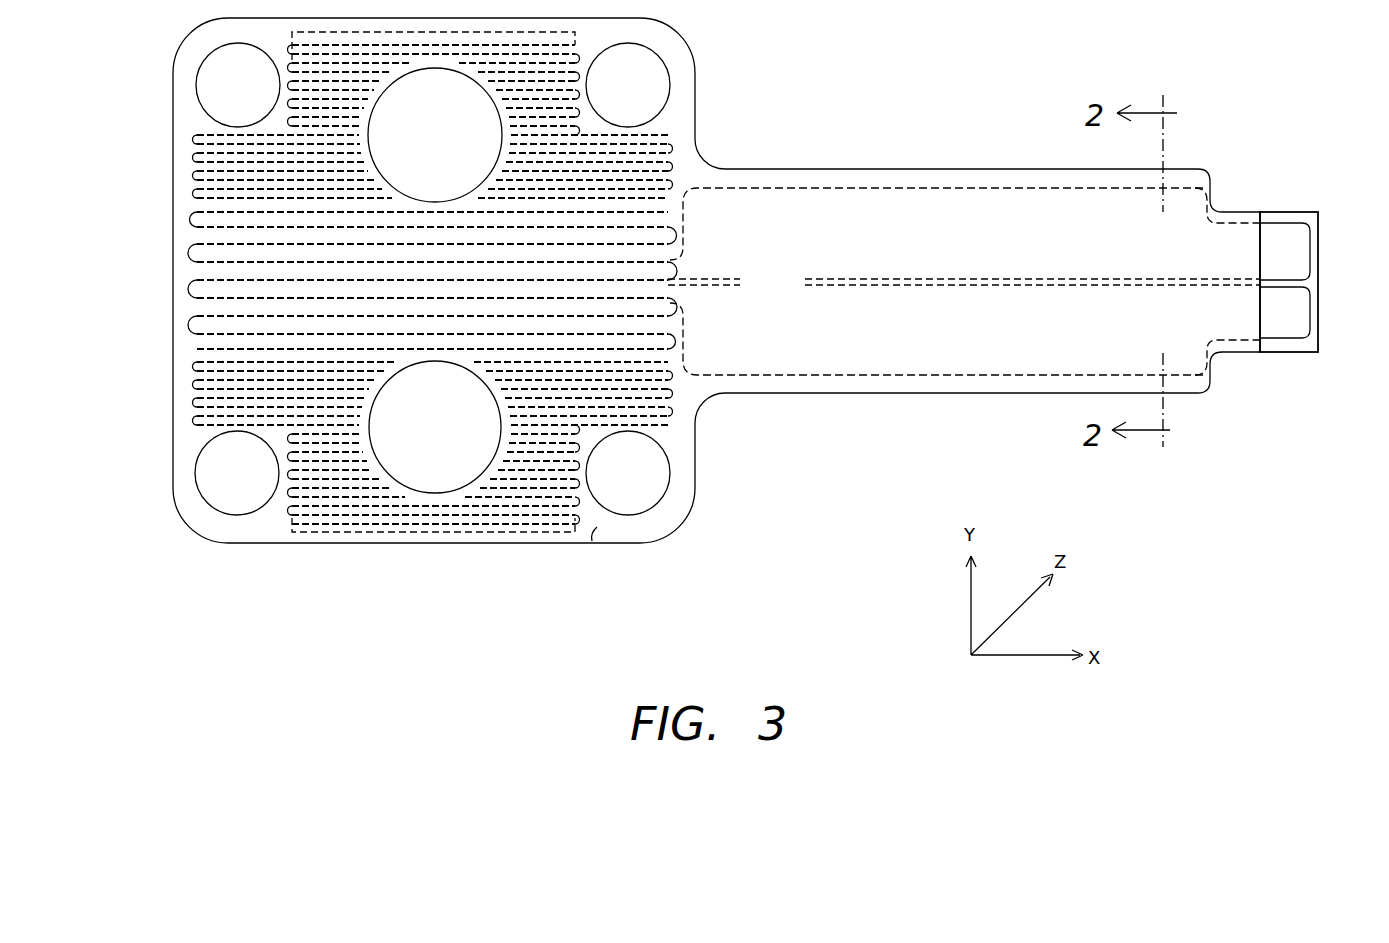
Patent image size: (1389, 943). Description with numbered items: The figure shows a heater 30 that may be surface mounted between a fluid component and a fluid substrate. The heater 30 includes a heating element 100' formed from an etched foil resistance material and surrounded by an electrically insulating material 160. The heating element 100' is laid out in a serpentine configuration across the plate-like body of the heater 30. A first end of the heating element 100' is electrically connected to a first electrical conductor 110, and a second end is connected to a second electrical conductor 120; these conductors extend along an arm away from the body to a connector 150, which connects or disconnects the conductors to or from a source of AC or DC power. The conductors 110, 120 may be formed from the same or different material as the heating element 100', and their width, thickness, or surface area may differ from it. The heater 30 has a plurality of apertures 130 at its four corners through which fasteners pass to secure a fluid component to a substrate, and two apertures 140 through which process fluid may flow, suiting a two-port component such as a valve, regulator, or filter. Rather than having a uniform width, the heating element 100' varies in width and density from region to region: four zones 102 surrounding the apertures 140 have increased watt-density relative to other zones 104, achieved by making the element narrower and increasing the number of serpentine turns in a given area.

The heater 30 is at (1030, 57).
The heating element 100' is at (433, 311).
The zones 102 is at (155, 42).
The other zones 104 is at (155, 208).
The first electrical conductor 110 is at (880, 187).
The second electrical conductor 120 is at (880, 375).
The apertures 130 is at (212, 55).
The apertures 140 is at (457, 148).
The connector 150 is at (1287, 212).
The electrically insulating material 160 is at (597, 527).